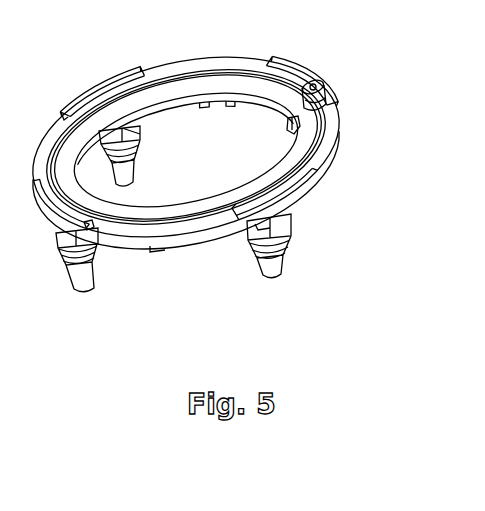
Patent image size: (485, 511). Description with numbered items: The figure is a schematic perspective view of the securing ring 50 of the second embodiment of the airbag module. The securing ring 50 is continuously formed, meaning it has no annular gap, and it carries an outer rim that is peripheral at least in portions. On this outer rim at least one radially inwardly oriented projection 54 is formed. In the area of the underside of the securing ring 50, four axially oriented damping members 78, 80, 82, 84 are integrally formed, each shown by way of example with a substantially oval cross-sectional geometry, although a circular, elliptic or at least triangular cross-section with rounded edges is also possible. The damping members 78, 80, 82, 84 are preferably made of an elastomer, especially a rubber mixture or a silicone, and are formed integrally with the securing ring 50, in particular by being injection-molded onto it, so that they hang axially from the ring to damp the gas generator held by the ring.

The securing ring 50 is at (207, 67).
The radially inwardly oriented projection 54 is at (117, 70).
The damping member 78 is at (277, 281).
The damping member 80 is at (290, 129).
The damping member 82 is at (148, 166).
The damping member 84 is at (94, 291).